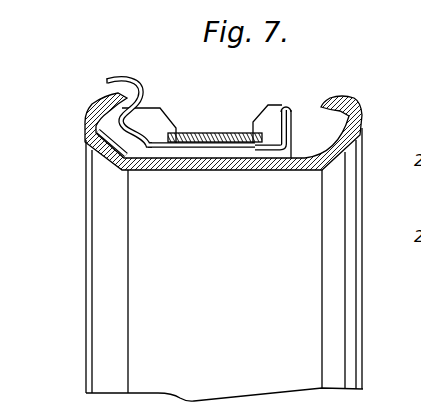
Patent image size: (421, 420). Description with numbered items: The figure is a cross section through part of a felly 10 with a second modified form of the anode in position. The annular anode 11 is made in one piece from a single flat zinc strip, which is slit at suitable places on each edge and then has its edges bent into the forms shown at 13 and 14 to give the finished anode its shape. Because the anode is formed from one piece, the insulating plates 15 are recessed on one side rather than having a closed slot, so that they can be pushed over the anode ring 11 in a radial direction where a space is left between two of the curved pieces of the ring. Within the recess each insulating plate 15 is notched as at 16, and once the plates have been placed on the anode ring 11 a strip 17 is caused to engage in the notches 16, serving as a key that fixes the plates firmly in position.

The felly 10 is at (344, 96).
The annular anode 11 is at (192, 134).
The bent edge of the anode 13 is at (126, 87).
The bent edge of the anode 14 is at (293, 108).
The insulating plate 15 is at (267, 112).
The notch 16 is at (172, 133).
The strip 17 is at (216, 141).